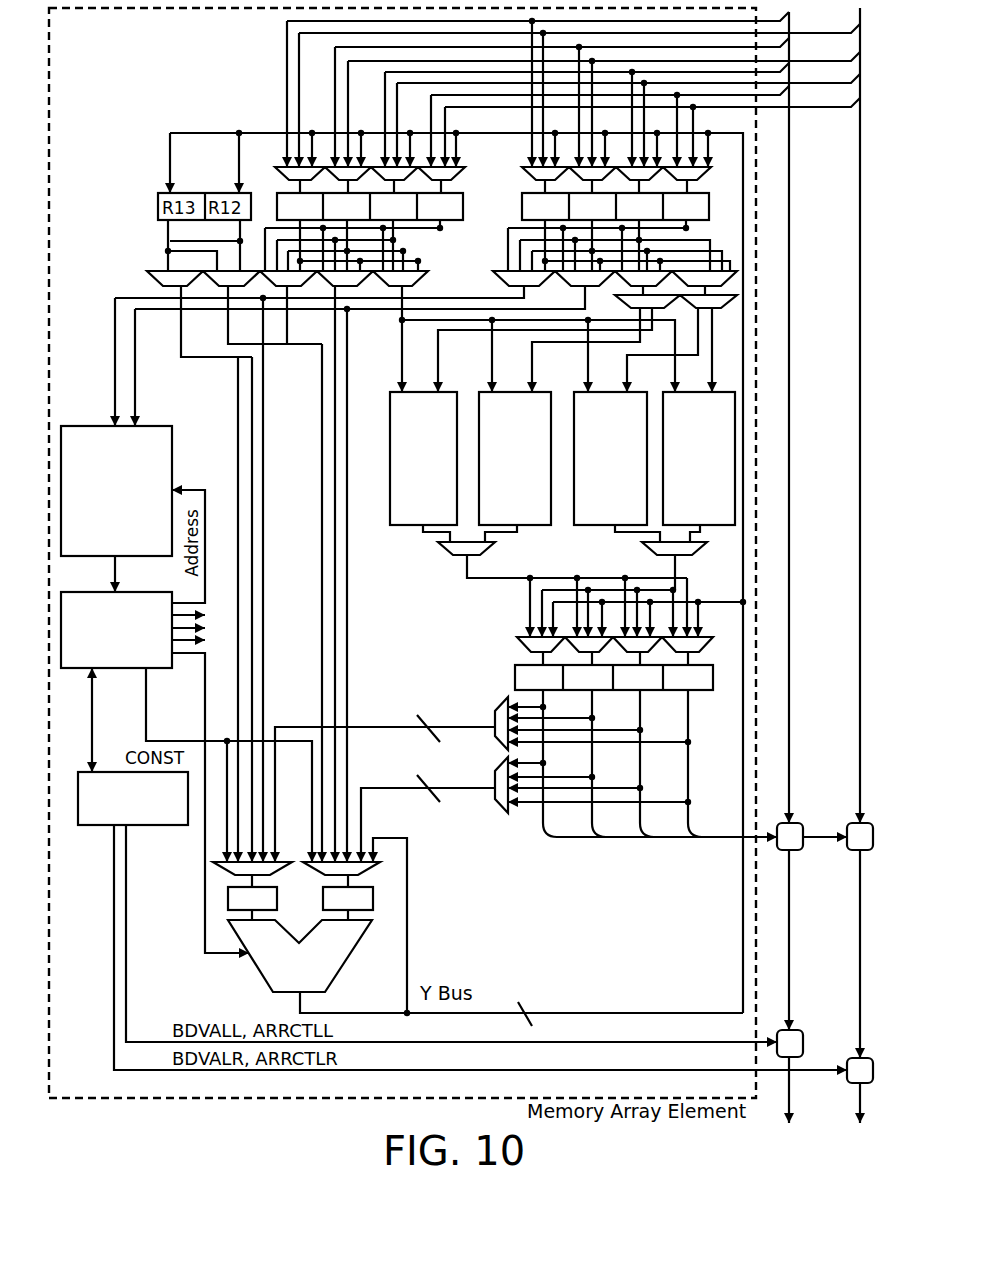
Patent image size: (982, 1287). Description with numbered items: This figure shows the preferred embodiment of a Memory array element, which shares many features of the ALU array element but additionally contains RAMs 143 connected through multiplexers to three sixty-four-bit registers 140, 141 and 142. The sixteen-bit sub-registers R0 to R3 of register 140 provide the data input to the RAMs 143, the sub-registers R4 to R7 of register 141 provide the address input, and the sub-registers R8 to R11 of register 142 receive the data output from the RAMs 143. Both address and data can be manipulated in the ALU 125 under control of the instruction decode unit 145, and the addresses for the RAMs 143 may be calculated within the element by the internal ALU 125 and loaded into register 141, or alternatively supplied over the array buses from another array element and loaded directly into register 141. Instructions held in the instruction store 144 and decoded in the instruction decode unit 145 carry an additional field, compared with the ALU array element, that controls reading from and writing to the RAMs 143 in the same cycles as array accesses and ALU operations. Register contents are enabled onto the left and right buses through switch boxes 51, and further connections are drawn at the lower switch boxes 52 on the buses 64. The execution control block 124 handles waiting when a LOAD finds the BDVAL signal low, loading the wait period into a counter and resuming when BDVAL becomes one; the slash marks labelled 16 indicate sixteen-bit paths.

The 64-bit register 140 is at (522, 200).
The 64-bit register 141 is at (444, 220).
The 64-bit register 142 is at (515, 678).
The RAMs 143 is at (702, 525).
The instruction store 144 is at (159, 426).
The instruction decode unit 145 is at (118, 668).
The execution control block 124 is at (166, 825).
The ALU 125 is at (259, 970).
The switch boxes 51 is at (875, 823).
The bus switch 52 is at (875, 1058).
The bus 64 is at (778, 450).
The 16-bit bus width 16 is at (485, 866).